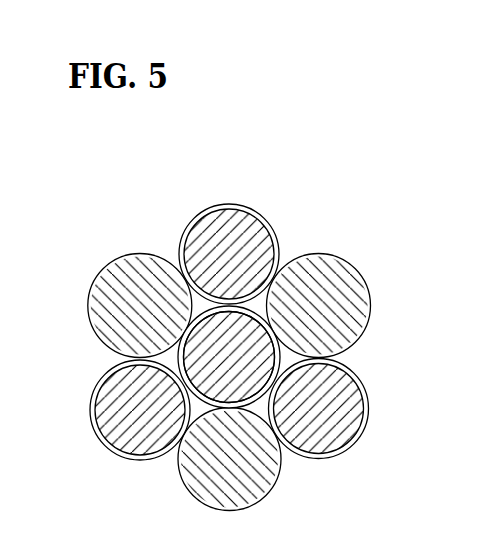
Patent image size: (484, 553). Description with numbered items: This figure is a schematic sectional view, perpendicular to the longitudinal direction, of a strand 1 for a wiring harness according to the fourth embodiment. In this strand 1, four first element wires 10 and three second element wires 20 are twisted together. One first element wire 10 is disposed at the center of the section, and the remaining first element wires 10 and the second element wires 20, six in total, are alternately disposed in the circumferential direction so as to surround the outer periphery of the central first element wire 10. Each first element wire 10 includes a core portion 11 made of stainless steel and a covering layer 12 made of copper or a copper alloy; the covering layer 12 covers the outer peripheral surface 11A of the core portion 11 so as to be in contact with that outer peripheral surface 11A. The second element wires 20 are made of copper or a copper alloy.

The strand 1 is at (329, 226).
The first element wire 10 is at (230, 307).
The core portion 11 is at (216, 232).
The outer peripheral surface 11A is at (300, 324).
The covering layer 12 is at (218, 229).
The second element wire 20 is at (120, 278).